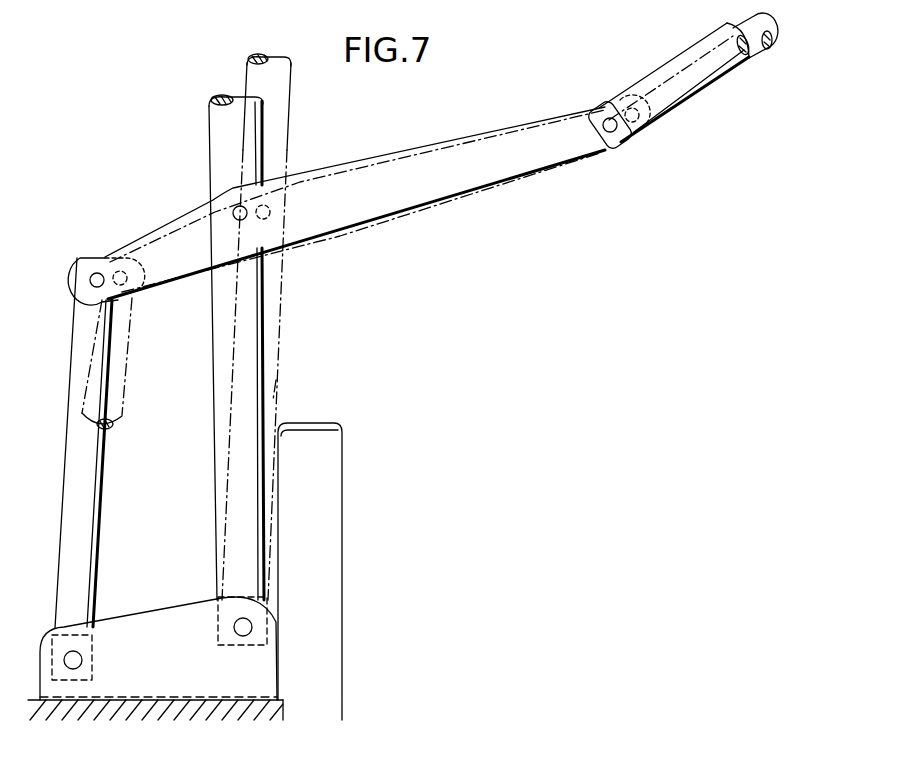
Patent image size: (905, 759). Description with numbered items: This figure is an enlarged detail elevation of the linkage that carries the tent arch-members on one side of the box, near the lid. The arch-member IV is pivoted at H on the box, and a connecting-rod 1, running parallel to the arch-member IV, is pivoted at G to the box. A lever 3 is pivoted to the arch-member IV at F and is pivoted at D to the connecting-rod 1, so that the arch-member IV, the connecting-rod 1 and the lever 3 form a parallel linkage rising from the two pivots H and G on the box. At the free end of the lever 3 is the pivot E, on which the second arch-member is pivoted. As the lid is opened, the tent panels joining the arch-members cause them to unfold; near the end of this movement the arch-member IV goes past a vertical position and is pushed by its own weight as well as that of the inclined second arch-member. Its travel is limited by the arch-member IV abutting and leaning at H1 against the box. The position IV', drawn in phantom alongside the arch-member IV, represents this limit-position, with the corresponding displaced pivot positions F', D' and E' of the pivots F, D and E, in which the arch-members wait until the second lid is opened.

The arch-member IV is at (233, 331).
The limit-position of arch-member IV IV' is at (256, 316).
The lever 3 is at (355, 203).
The pivot of lever on arch-member IV F is at (231, 226).
The pivot F in limit-position F' is at (273, 202).
The pivot of lever on connecting-rod D is at (87, 281).
The pivot D in limit-position D' is at (130, 274).
The pivot of arch-member V on lever E is at (607, 125).
The pivot E in limit-position E' is at (637, 105).
The abutment point on box H1 is at (273, 388).
The connecting-rod 1 is at (93, 443).
The pivot of connecting-rod on box G is at (72, 652).
The pivot of arch-member IV on box H is at (242, 620).